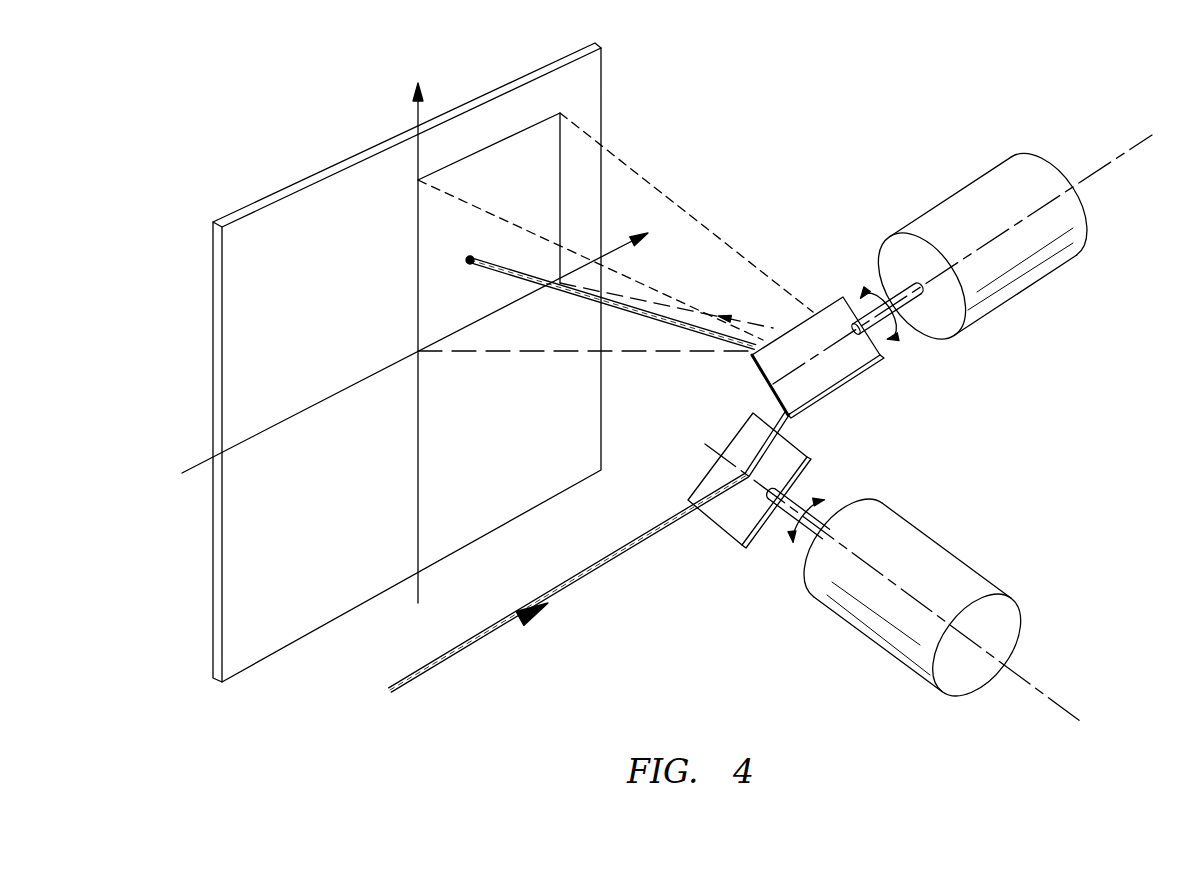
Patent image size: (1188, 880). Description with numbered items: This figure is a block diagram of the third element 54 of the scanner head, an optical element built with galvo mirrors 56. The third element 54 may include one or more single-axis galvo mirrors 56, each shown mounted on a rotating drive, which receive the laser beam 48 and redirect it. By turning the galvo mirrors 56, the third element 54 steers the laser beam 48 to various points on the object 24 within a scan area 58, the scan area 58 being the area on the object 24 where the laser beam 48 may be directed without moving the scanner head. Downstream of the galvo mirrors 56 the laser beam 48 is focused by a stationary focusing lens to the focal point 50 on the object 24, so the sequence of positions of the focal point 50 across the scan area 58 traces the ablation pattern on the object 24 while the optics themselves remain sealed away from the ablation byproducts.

The object 24 is at (597, 65).
The laser beam 48 is at (593, 577).
The focal point 50 is at (466, 261).
The third element 54 is at (1117, 358).
The galvo mirrors 56 is at (850, 382).
The scan area 58 is at (512, 152).